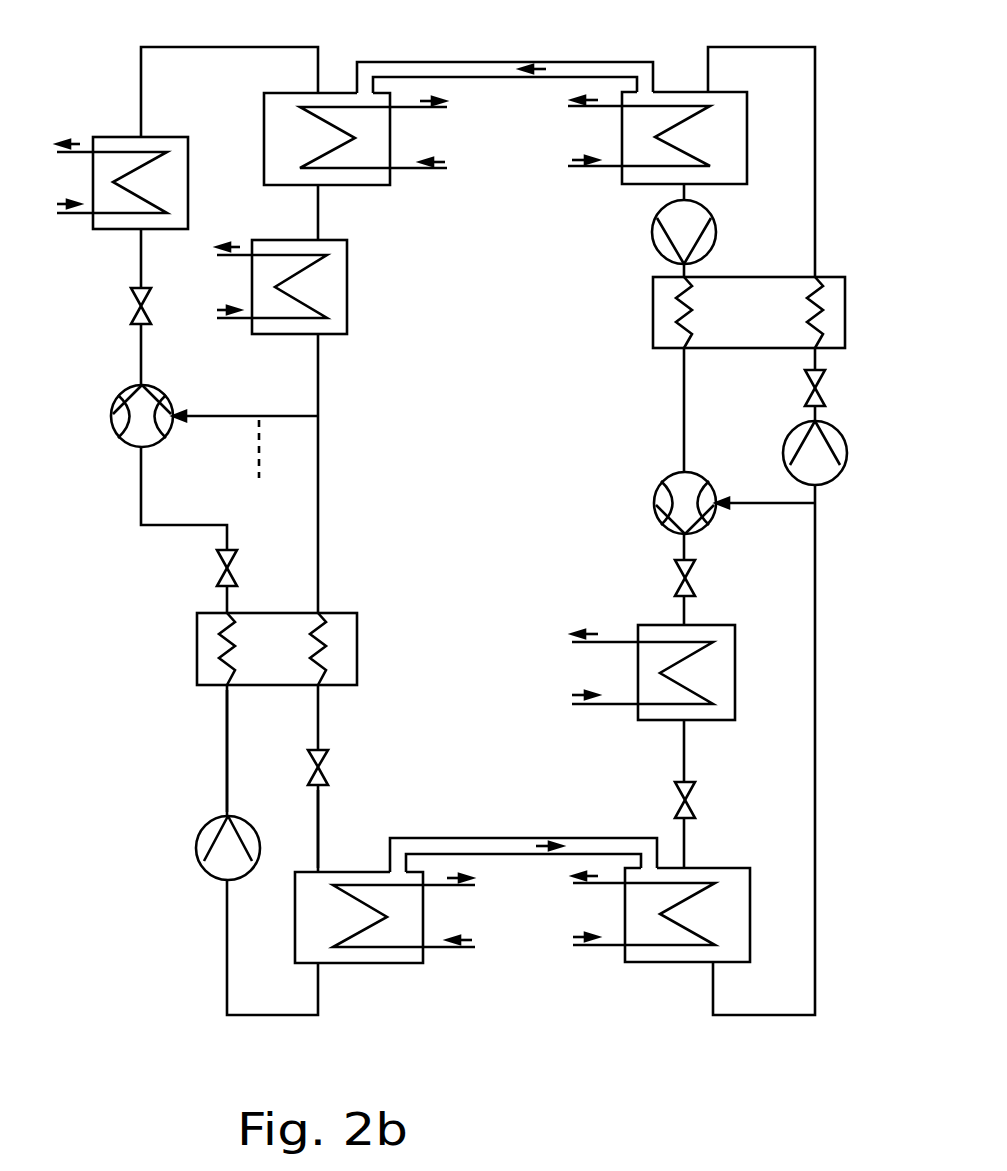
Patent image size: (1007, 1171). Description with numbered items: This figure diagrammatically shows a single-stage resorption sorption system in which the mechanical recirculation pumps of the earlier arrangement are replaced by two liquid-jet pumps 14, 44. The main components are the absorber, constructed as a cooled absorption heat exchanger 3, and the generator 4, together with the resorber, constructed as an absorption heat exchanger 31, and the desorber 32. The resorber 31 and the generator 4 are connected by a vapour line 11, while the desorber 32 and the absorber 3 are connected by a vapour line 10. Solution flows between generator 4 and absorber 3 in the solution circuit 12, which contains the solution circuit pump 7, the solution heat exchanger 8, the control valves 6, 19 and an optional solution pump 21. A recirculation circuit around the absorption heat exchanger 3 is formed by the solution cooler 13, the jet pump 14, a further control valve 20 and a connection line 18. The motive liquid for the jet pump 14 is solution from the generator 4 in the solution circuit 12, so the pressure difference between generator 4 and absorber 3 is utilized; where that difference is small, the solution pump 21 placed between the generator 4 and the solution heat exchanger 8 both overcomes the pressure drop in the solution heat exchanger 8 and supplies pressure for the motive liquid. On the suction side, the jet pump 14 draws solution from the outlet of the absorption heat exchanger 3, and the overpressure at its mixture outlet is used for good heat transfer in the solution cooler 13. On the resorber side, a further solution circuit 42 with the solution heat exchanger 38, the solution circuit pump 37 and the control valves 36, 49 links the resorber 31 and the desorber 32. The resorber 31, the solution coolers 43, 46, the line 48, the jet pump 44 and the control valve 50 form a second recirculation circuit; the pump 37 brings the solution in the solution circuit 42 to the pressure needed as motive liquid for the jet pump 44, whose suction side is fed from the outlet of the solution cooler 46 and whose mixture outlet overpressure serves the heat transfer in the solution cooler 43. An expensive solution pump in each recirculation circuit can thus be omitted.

The absorption heat exchanger 3 is at (647, 966).
The generator 4 is at (741, 103).
The control valve 6 is at (673, 800).
The solution circuit pump 7 is at (850, 458).
The solution heat exchanger 8 is at (833, 298).
The vapour line 10 is at (506, 832).
The vapour line 11 is at (505, 57).
The solution circuit 12 is at (818, 148).
The solution cooler 13 is at (645, 718).
The liquid-jet pump 14 is at (652, 503).
The connection line 18 is at (790, 510).
The control valve 19 is at (830, 390).
The control valve 20 is at (673, 578).
The solution pump 21 is at (650, 232).
The absorption heat exchanger 31 is at (375, 183).
The desorber 32 is at (382, 955).
The control valve 36 is at (335, 760).
The solution circuit pump 37 is at (198, 866).
The solution heat exchanger 38 is at (349, 612).
The solution circuit 42 is at (216, 751).
The solution cooler 43 is at (102, 140).
The liquid-jet pump 44 is at (108, 417).
The solution cooler 46 is at (350, 298).
The line 48 is at (265, 469).
The control valve 49 is at (215, 568).
The control valve 50 is at (129, 307).